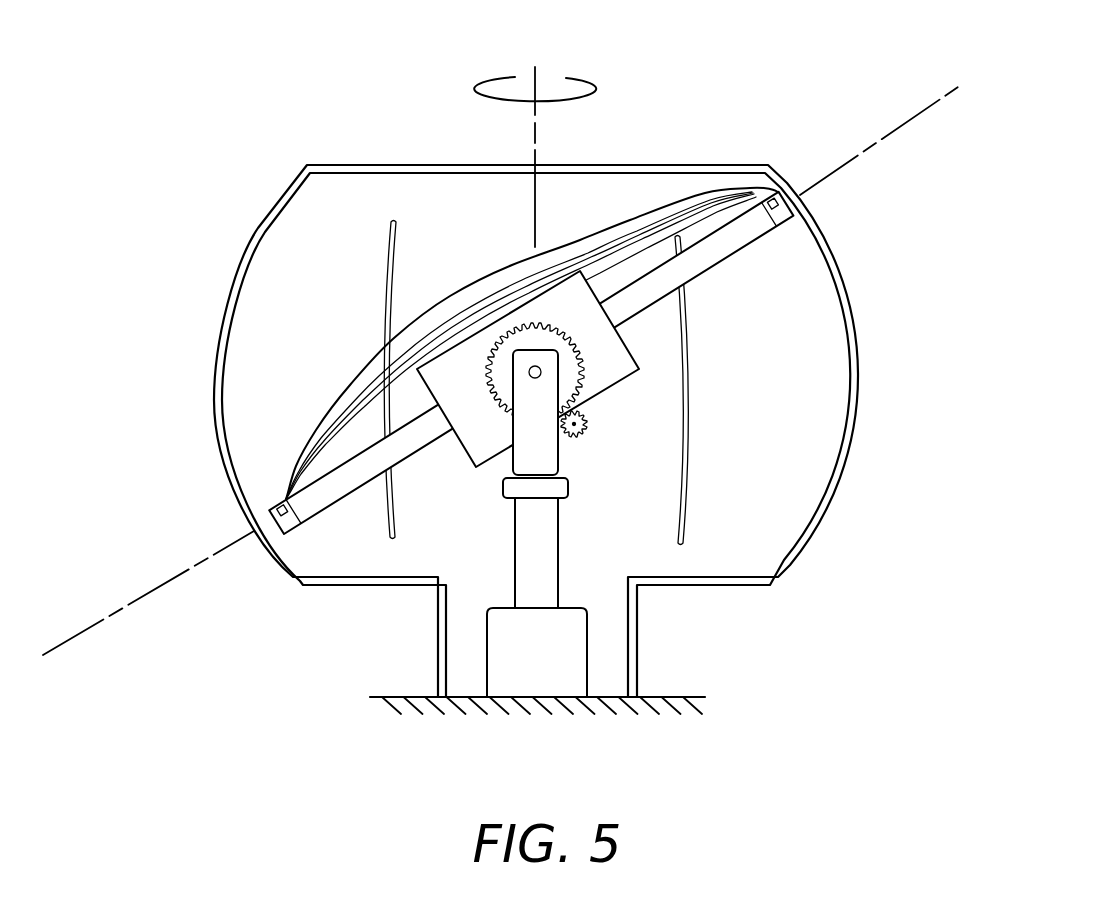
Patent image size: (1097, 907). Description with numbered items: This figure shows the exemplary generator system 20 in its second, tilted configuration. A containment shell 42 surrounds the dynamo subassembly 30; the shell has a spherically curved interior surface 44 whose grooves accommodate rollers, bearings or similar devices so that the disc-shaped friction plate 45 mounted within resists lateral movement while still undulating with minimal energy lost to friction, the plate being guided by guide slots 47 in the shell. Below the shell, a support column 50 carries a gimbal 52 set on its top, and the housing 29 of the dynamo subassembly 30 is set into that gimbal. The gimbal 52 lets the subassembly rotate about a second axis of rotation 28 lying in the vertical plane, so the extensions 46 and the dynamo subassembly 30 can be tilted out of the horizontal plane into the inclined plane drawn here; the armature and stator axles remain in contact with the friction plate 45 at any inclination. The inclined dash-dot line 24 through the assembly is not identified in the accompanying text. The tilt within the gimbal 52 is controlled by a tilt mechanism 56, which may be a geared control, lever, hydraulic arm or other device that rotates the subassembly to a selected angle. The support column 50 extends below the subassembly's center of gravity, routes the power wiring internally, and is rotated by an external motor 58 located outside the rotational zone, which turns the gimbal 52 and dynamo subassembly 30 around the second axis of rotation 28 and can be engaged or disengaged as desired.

The gimbal assembly 20 is at (355, 117).
The tilt axis 24 is at (858, 156).
The second axis of rotation 28 is at (540, 90).
The housing 29 is at (392, 344).
The dynamo subassembly 30 is at (510, 290).
The containment shell 42 is at (257, 228).
The spherically curved interior surface 44 is at (255, 265).
The disc-shaped friction plate 45 is at (705, 196).
The extensions 46 is at (668, 283).
The guide slots 47 is at (687, 462).
The support column 50 is at (532, 542).
The gimbal 52 is at (537, 432).
The tilt mechanism 56 is at (572, 430).
The motor 58 is at (513, 657).